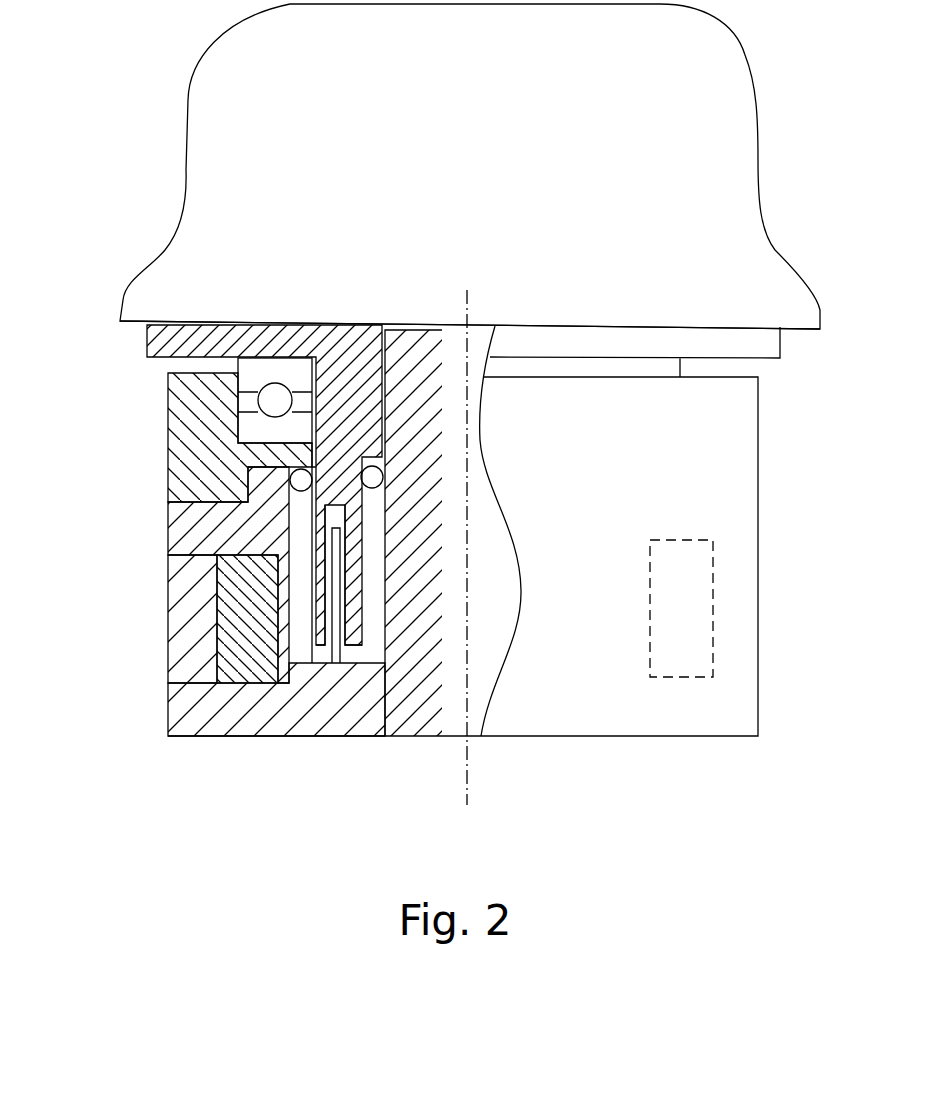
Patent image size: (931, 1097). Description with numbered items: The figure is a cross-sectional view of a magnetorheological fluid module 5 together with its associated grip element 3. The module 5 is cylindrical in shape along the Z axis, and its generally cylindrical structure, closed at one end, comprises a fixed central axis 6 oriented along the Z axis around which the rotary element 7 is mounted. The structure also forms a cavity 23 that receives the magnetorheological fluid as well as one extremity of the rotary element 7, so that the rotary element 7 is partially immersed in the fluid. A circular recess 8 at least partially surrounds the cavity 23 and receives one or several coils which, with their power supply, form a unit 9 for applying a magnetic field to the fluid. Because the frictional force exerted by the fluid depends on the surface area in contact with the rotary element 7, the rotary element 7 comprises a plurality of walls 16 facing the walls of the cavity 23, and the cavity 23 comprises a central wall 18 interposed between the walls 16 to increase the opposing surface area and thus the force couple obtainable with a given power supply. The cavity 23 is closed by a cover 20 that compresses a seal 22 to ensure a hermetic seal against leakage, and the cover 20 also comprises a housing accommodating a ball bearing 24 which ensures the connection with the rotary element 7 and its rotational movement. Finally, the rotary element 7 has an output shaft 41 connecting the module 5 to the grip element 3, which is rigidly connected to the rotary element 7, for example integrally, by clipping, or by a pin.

The grip element 3 is at (203, 118).
The magnetorheological fluid module 5 is at (727, 710).
The fixed central axis 6 is at (410, 625).
The rotary element 7 is at (310, 513).
The circular recess 8 is at (215, 660).
The unit for applying a magnetic field 9 is at (235, 612).
The walls 16 is at (322, 625).
The central wall 18 is at (332, 647).
The cover 20 is at (193, 463).
The seal 22 is at (386, 477).
The cavity 23 is at (215, 540).
The ball bearing 24 is at (268, 400).
The output shaft 41 is at (145, 330).
The Z axis Z is at (467, 758).